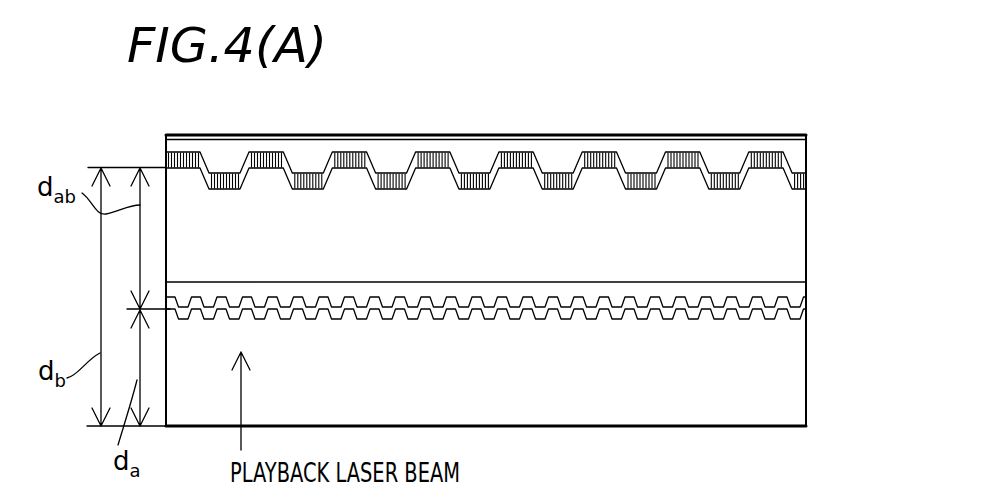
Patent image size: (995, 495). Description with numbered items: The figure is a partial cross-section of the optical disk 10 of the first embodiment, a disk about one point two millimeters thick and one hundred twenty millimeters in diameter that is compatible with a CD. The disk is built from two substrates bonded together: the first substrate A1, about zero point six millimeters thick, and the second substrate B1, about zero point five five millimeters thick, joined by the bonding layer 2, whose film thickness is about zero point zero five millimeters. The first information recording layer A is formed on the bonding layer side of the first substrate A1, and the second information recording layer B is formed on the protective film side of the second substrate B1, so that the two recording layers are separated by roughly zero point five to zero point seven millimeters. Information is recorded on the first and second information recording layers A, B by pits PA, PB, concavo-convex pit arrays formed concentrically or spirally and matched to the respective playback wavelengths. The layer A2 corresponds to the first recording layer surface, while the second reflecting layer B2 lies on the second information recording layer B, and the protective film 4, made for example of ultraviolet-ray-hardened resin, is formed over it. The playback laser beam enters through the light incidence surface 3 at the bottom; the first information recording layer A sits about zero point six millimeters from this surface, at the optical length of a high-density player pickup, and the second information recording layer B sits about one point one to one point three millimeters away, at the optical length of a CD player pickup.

The optical disk 10 is at (78, 130).
The protective film 4 is at (797, 143).
The second reflecting layer B2 is at (808, 180).
The second information recording layer B is at (823, 197).
The second substrate B1 is at (789, 242).
The pits PB is at (548, 188).
The bonding layer 2 is at (798, 290).
The first recording layer pit surface A2 is at (793, 319).
The first information recording layer A is at (825, 319).
The first substrate A1 is at (788, 382).
The pits PA is at (488, 319).
The light incidence surface 3 is at (782, 430).